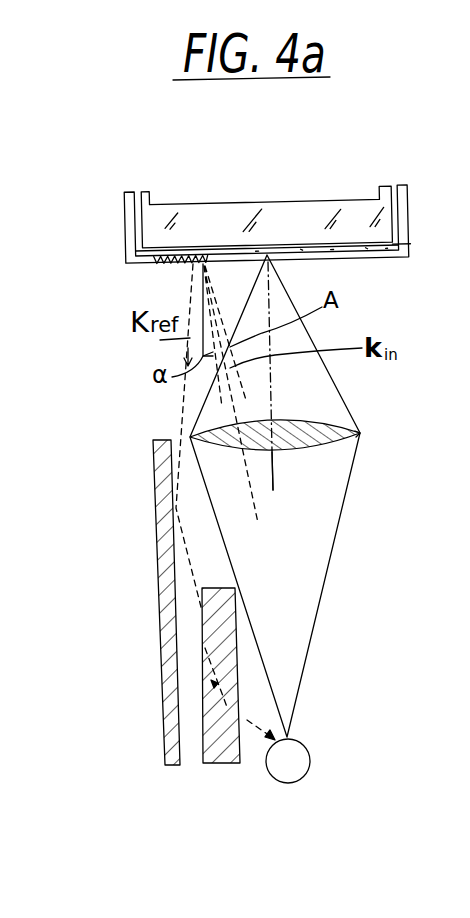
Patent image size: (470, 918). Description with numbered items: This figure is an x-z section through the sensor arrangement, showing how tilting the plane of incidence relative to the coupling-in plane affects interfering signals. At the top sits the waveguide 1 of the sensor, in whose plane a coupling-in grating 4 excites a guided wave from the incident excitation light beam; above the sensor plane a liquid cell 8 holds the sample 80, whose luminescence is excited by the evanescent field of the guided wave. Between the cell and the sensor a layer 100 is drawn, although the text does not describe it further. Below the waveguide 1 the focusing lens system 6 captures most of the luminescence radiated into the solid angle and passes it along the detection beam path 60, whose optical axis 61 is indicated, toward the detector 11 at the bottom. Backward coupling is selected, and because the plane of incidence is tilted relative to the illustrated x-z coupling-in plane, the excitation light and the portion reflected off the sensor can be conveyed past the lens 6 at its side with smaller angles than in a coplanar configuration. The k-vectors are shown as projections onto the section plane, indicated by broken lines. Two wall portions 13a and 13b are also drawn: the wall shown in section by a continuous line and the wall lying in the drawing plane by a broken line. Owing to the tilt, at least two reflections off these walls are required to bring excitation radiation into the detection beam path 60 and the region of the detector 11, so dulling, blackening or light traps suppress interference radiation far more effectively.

The waveguide 1 is at (367, 256).
The coupling-in grating 4 is at (197, 252).
The liquid cell 8 is at (317, 203).
The bottom plate 100 is at (340, 247).
The sample 80 is at (410, 245).
The detection beam path 60 is at (333, 408).
The focusing lens system 6 is at (347, 440).
The optical axis 61 is at (275, 478).
The wall portion 13a is at (170, 603).
The wall portion 13b is at (203, 727).
The detector 11 is at (310, 749).